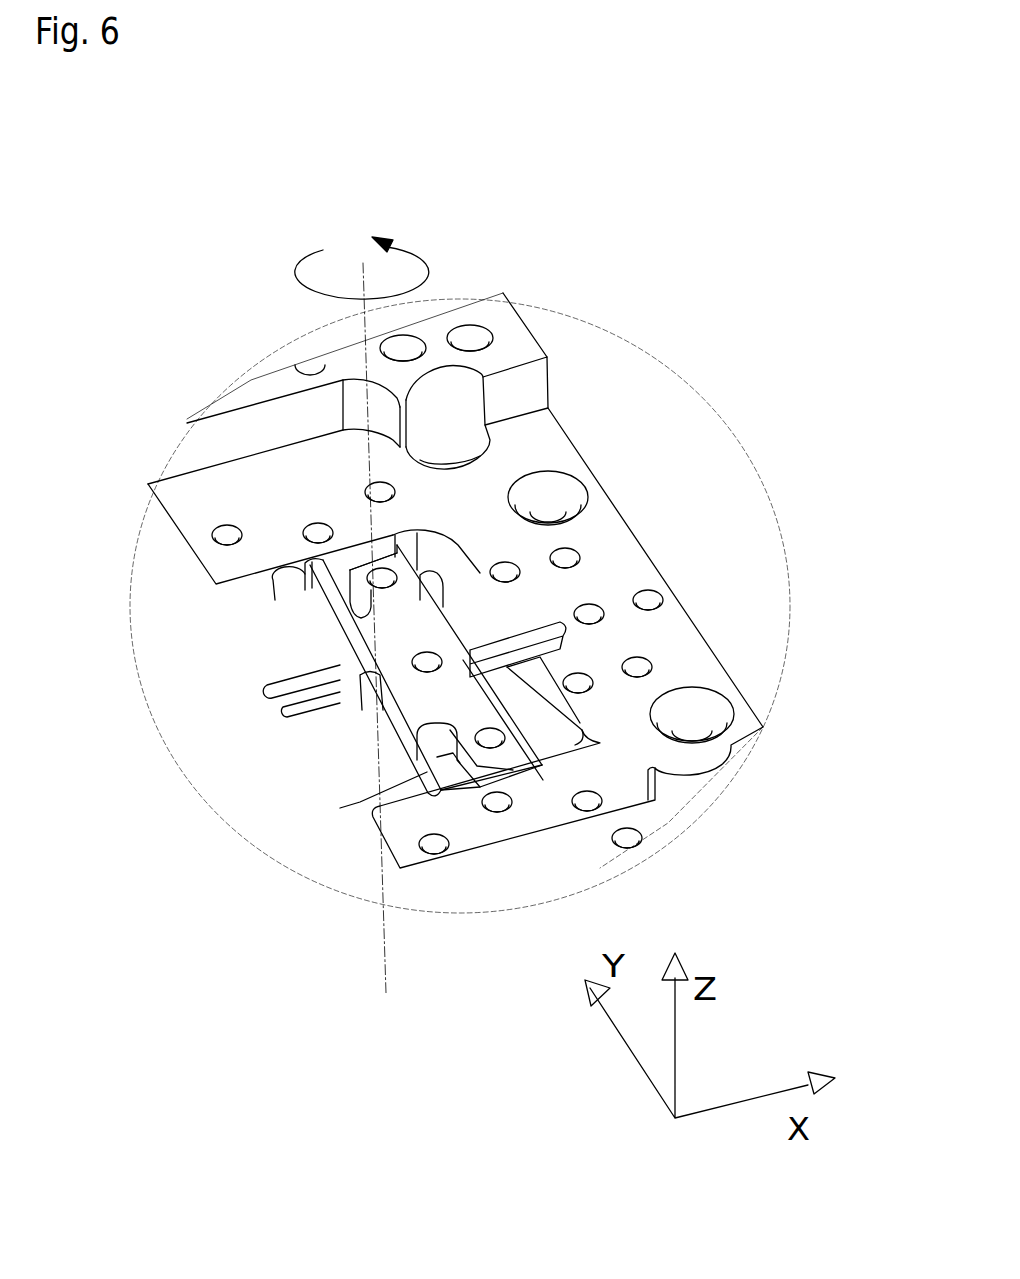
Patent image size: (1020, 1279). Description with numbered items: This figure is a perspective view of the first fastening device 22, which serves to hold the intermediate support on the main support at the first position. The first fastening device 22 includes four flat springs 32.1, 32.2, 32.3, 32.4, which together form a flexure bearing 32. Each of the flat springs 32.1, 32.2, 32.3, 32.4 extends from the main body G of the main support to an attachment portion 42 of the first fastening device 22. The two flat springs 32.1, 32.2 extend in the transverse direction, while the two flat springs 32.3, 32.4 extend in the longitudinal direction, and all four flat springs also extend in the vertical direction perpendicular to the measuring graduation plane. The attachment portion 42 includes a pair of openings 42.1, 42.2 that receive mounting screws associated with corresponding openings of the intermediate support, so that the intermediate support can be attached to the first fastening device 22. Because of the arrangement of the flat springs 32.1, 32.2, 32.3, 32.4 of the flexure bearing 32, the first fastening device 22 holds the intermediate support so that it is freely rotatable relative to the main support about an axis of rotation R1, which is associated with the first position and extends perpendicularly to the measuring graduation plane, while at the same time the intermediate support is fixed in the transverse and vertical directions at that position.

The first fastening device 22 is at (166, 278).
The main body G is at (276, 487).
The axis of rotation R1 is at (383, 950).
The flexure bearing 32 is at (406, 744).
The flat spring 32.1 is at (340, 808).
The flat spring 32.2 is at (318, 590).
The flat spring 32.3 is at (498, 658).
The flat spring 32.4 is at (330, 705).
The attachment portion 42 is at (330, 660).
The opening 42.1 is at (497, 718).
The opening 42.2 is at (393, 553).